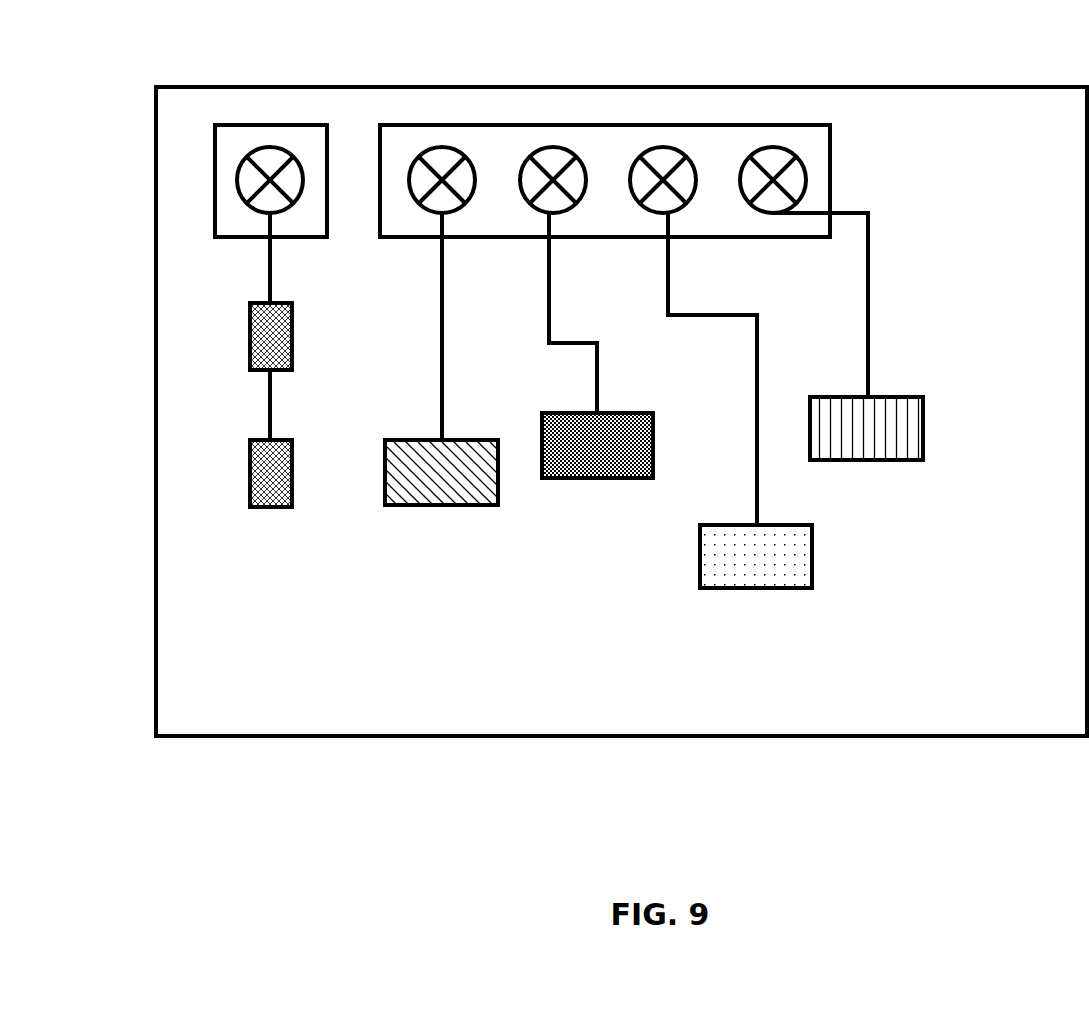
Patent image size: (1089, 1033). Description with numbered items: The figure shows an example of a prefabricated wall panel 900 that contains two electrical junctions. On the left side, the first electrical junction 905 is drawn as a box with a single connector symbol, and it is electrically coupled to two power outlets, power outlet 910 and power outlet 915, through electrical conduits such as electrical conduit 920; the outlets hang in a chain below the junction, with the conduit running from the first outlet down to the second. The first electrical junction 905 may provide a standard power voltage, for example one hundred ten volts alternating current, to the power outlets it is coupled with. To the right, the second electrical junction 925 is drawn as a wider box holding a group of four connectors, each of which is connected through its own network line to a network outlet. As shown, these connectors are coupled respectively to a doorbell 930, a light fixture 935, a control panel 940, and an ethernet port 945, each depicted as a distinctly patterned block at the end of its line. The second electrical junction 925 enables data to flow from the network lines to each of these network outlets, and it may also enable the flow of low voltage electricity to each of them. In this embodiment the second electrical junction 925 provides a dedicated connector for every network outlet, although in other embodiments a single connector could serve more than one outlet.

The wall panel 900 is at (620, 62).
The first electrical junction 905 is at (215, 178).
The power outlet 910 is at (292, 343).
The power outlet 915 is at (292, 480).
The electrical conduit 920 is at (270, 400).
The second electrical junction 925 is at (830, 175).
The doorbell 930 is at (450, 507).
The light fixture 935 is at (598, 478).
The control panel 940 is at (755, 588).
The ethernet port 945 is at (863, 460).